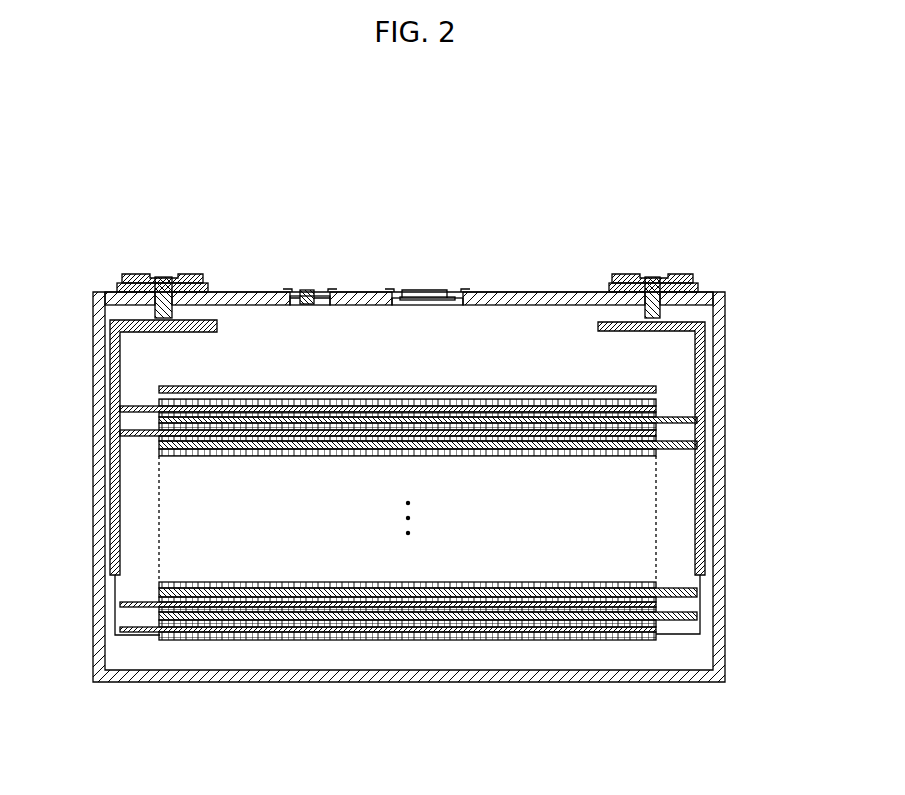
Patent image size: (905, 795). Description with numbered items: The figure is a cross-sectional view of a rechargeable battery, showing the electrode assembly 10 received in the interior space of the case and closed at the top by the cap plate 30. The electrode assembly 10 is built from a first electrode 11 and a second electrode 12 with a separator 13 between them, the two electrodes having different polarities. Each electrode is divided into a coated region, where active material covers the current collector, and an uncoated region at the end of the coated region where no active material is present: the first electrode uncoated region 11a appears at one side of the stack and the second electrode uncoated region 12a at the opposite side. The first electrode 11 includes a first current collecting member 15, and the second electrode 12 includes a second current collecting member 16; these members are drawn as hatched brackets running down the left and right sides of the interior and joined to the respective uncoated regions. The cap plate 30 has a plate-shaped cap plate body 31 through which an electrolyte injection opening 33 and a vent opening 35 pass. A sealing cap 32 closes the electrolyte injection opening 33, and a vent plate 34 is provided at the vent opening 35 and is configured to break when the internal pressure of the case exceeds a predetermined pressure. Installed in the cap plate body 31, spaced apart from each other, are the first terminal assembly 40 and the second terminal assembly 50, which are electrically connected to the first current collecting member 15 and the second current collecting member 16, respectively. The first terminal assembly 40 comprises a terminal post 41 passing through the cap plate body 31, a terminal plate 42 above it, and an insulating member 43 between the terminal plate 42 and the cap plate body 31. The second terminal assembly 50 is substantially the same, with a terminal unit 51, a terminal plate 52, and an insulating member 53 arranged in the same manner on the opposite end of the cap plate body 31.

The electrode assembly 10 is at (510, 650).
The first electrode 11 is at (592, 632).
The first electrode uncoated region 11a is at (680, 620).
The second electrode 12 is at (230, 607).
The second electrode uncoated region 12a is at (140, 630).
The separator 13 is at (408, 561).
The first current collecting member 15 is at (112, 492).
The second current collecting member 16 is at (705, 496).
The cap plate 30 is at (409, 275).
The cap plate body 31 is at (540, 292).
The sealing cap 32 is at (305, 292).
The electrolyte injection opening 33 is at (295, 305).
The vent plate 34 is at (430, 292).
The vent opening 35 is at (460, 305).
The first terminal assembly 40 is at (177, 262).
The terminal post 41 is at (168, 278).
The terminal plate 42 is at (135, 274).
The insulating member 43 is at (205, 286).
The second terminal assembly 50 is at (674, 262).
The terminal unit 51 is at (648, 278).
The terminal plate 52 is at (680, 274).
The insulating member 53 is at (700, 286).